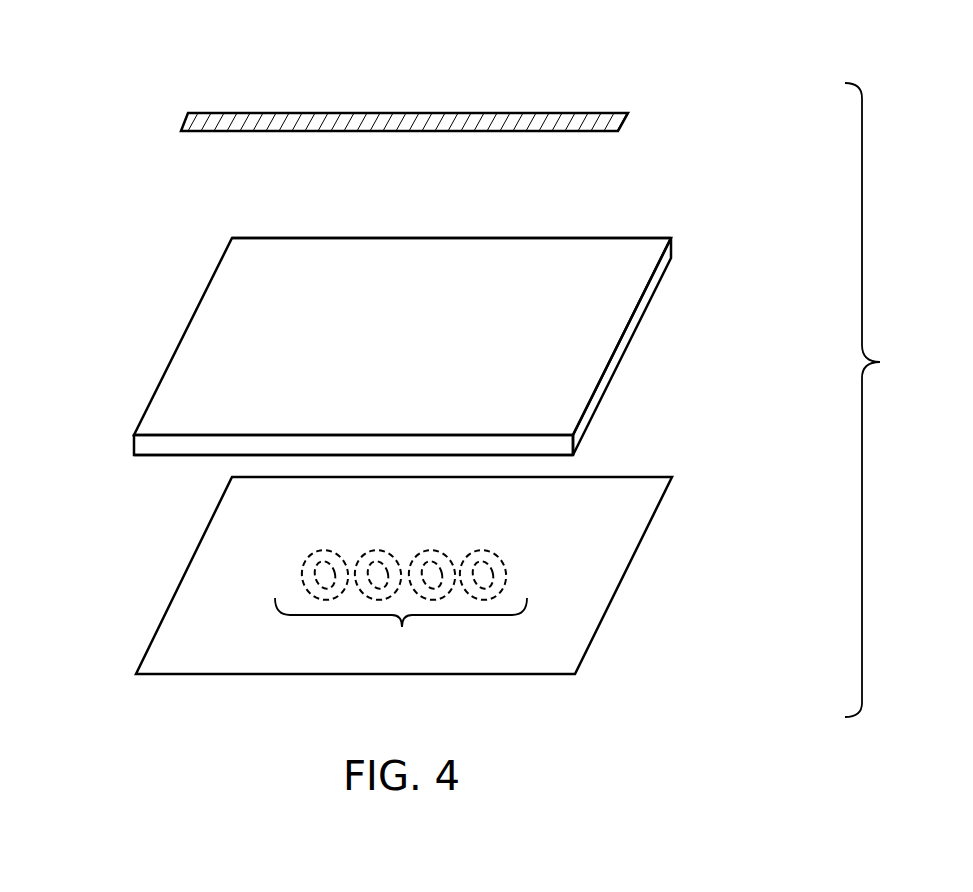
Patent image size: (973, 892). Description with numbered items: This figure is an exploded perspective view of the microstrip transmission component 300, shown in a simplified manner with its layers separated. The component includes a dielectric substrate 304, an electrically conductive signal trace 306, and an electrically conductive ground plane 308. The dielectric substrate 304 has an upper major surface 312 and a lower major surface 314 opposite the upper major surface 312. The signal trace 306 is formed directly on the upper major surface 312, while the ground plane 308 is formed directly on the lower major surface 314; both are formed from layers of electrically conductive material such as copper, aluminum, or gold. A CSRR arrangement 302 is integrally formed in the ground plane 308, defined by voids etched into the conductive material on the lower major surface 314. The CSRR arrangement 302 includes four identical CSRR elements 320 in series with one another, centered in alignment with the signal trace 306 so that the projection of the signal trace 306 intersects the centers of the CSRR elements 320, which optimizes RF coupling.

The microstrip transmission component 300 is at (895, 400).
The CSRR arrangement 302 is at (401, 629).
The dielectric substrate 304 is at (180, 339).
The electrically conductive signal trace 306 is at (183, 124).
The electrically conductive ground plane 308 is at (160, 618).
The upper major surface 312 is at (232, 276).
The lower major surface 314 is at (167, 456).
The CSRR elements 320 is at (305, 562).